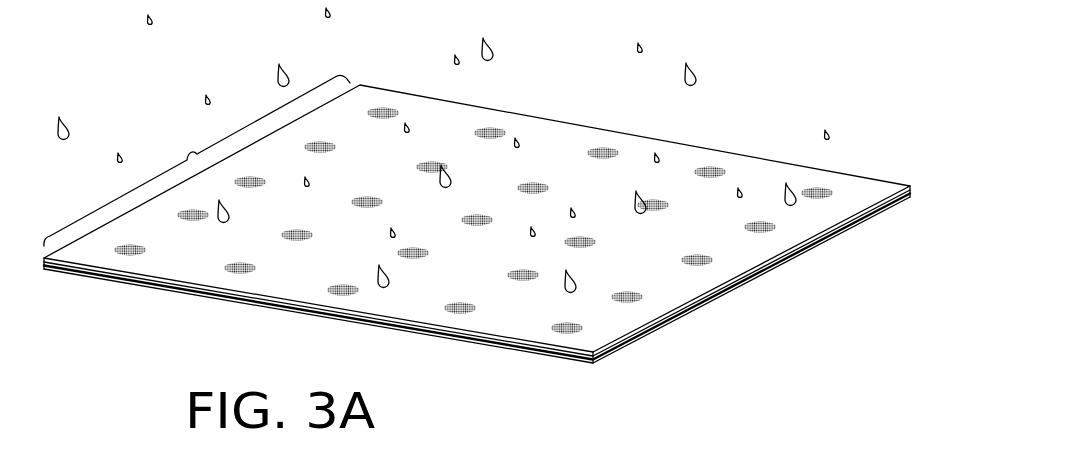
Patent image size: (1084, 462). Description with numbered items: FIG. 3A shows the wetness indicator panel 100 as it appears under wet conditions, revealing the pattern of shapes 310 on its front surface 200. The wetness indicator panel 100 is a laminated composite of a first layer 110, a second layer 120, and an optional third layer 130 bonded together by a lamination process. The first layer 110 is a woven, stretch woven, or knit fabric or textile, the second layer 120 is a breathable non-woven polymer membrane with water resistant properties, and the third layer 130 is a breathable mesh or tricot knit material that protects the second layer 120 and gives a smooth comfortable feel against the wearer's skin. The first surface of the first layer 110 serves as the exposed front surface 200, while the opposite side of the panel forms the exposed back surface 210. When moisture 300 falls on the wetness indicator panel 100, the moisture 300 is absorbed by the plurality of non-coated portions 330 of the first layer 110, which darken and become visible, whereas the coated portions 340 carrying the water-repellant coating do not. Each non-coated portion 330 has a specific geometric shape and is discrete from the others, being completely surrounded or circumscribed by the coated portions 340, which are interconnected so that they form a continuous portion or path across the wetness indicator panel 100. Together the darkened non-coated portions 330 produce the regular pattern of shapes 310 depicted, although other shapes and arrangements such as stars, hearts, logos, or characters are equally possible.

The wetness indicator panel 100 is at (504, 198).
The first layer 110 is at (910, 186).
The second layer 120 is at (913, 191).
The third layer 130 is at (913, 196).
The front surface 200 is at (504, 244).
The back surface 210 is at (189, 298).
The moisture 300 is at (492, 46).
The pattern of shapes 310 is at (197, 160).
The non-coated portions 330 is at (425, 251).
The coated portions 340 is at (650, 309).